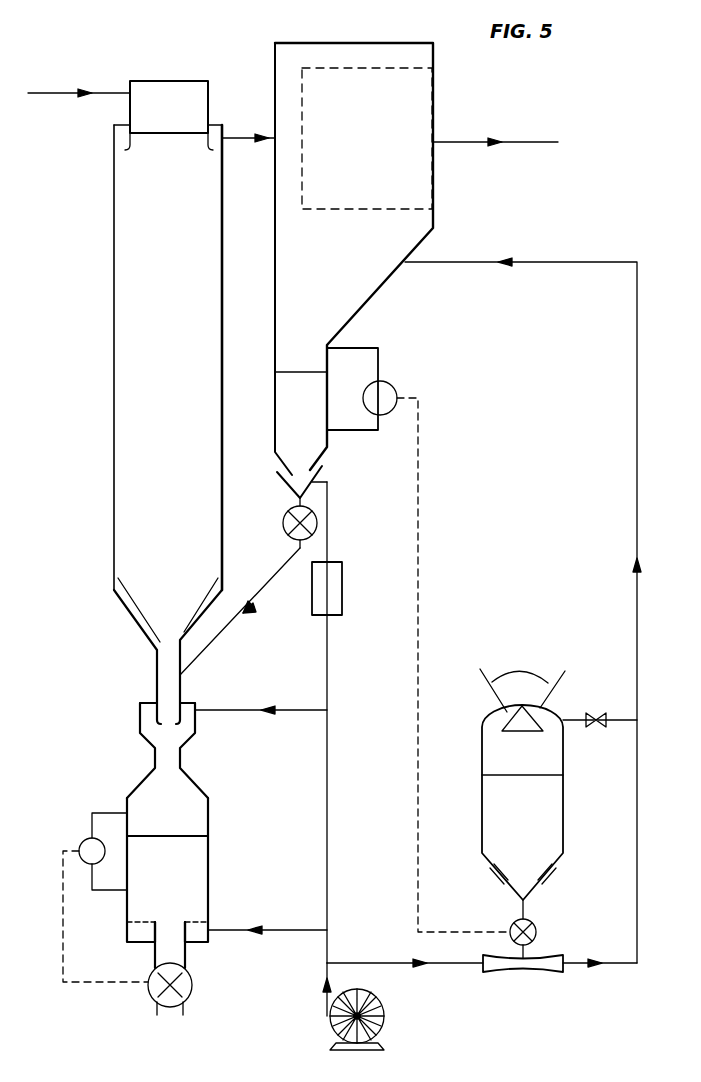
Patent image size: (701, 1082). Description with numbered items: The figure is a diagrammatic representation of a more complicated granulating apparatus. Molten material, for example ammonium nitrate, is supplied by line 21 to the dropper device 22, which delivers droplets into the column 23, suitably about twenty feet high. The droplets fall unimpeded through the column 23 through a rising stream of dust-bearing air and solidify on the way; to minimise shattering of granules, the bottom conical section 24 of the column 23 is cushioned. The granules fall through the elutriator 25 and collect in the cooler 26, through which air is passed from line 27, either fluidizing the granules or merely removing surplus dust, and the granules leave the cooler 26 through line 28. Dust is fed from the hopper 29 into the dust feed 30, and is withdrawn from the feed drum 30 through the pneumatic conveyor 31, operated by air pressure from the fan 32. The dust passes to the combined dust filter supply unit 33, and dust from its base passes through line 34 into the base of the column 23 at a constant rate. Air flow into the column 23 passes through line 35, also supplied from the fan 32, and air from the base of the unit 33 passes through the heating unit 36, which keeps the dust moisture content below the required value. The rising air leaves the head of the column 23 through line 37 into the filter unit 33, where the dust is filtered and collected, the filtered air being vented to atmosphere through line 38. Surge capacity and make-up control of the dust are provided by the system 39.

The line 21 is at (49, 88).
The dropper device 22 is at (165, 95).
The column 23 is at (127, 324).
The bottom conical section 24 is at (140, 620).
The elutriator 25 is at (148, 738).
The cooler 26 is at (210, 876).
The line 27 is at (268, 930).
The line 28 is at (183, 1005).
The hopper 29 is at (553, 695).
The dust feed 30 is at (565, 805).
The pneumatic conveyor 31 is at (510, 965).
The fan 32 is at (385, 1005).
The combined dust filter supply unit 33 is at (412, 226).
The line 34 is at (207, 652).
The line 35 is at (227, 710).
The heating unit 36 is at (344, 590).
The line 37 is at (243, 137).
The line 38 is at (526, 142).
The system 39 is at (383, 395).